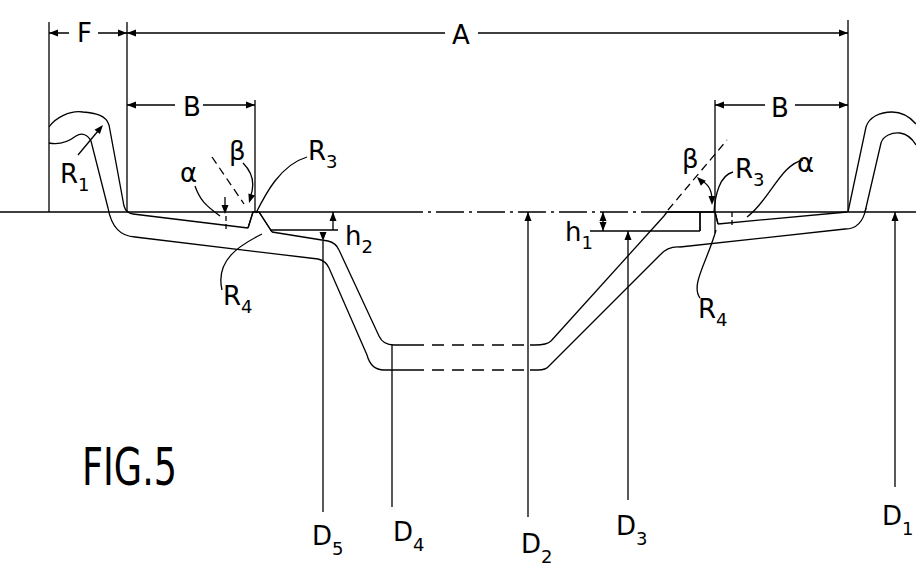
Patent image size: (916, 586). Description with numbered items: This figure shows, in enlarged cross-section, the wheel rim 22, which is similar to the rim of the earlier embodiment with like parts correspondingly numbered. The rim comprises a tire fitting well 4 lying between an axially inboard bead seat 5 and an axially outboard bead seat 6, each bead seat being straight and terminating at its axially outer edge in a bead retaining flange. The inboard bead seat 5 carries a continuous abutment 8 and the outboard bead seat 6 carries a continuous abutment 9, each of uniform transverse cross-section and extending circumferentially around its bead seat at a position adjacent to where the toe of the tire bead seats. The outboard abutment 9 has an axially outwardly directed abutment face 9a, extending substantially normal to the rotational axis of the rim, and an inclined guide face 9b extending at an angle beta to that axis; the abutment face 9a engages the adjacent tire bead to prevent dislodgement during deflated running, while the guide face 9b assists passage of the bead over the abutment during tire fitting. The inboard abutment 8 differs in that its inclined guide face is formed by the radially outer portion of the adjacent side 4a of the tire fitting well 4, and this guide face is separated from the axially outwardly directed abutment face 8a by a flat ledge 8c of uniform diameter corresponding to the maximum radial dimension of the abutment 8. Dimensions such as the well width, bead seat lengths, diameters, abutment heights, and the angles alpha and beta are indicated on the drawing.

The tire fitting well 4 is at (462, 371).
The side of the tire fitting well 4a is at (612, 272).
The inboard bead seat 5 is at (801, 216).
The outboard bead seat 6 is at (164, 216).
The abutment 8 is at (666, 214).
The abutment face 8a is at (718, 226).
The flat ledge 8c is at (697, 231).
The abutment 9 is at (265, 236).
The abutment face 9a is at (250, 222).
The inclined guide face 9b is at (263, 217).
The wheel rim 22 is at (262, 326).